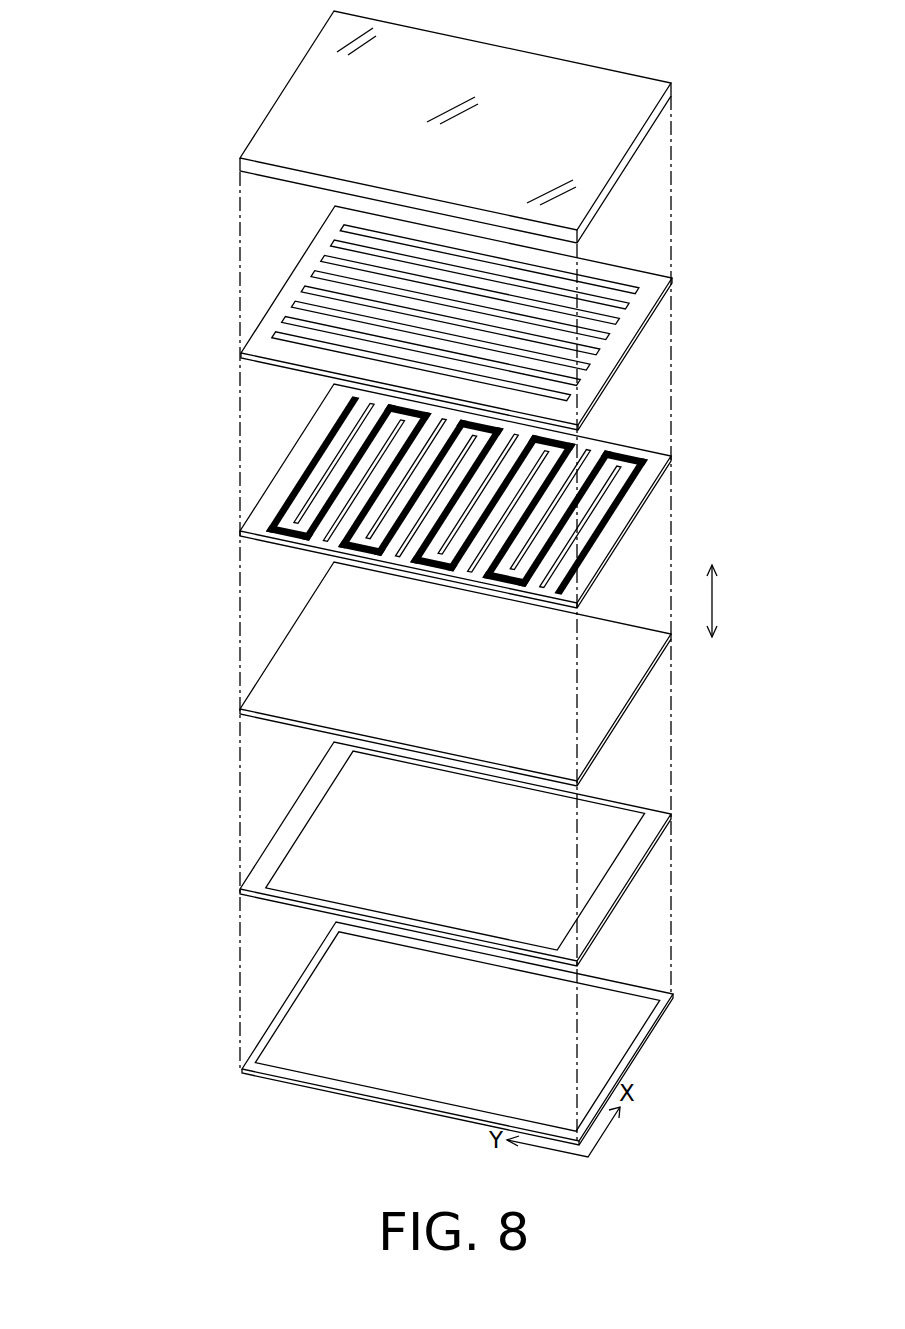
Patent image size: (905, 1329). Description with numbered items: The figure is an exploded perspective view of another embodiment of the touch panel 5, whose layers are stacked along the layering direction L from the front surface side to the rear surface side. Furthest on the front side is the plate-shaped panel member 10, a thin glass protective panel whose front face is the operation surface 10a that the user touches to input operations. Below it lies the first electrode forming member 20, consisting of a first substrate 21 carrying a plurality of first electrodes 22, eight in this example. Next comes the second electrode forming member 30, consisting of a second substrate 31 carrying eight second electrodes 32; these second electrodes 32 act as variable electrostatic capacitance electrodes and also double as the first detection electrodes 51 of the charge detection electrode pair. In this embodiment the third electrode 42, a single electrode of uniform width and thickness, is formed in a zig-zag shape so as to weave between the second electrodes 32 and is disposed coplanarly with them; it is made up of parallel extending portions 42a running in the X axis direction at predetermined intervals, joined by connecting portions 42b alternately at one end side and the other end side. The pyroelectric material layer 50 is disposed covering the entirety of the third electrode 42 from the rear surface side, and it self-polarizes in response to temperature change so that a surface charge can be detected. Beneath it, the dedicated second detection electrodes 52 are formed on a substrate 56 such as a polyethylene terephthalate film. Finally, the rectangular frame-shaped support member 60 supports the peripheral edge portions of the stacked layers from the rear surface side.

The touch panel 5 is at (150, 108).
The panel member 10 is at (485, 121).
The operation surface 10a is at (563, 90).
The first electrode forming member 20 is at (462, 314).
The first substrate 21 is at (652, 289).
The first electrodes 22 is at (597, 354).
The second electrode forming member 30 is at (433, 524).
The second substrate 31 is at (632, 500).
The second electrodes 32 is at (396, 530).
The first detection electrodes 51 is at (345, 478).
The third electrode 42 is at (374, 495).
The parallel extending portions 42a is at (340, 515).
The connecting portions 42b is at (275, 534).
The pyroelectric material layer 50 is at (632, 673).
The second detection electrodes 52 is at (297, 868).
The substrate 56 is at (454, 854).
The support member 60 is at (638, 1050).
The layering direction L is at (712, 598).